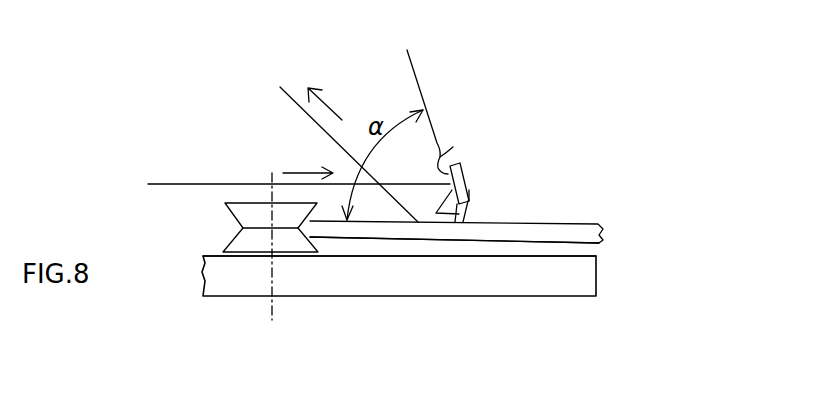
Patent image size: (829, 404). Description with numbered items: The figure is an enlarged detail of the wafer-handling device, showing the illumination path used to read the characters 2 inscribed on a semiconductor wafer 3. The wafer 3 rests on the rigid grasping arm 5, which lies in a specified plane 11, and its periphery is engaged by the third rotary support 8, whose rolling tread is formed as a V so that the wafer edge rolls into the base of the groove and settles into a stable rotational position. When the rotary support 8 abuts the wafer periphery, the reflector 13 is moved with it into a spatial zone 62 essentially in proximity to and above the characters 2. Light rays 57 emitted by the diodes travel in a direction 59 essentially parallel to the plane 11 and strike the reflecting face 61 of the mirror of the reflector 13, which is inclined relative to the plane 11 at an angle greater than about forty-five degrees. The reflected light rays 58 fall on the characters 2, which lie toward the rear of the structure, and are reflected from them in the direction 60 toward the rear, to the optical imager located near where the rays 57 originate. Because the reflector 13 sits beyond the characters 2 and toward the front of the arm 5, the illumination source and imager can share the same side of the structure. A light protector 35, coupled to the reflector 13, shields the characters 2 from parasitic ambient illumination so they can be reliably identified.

The characters 2 is at (475, 207).
The semiconductor wafer 3 is at (542, 223).
The rigid grasping arm 5 is at (365, 286).
The third rotary support 8 is at (241, 230).
The specified plane 11 is at (563, 257).
The reflector 13 is at (467, 167).
The light protector 35 is at (470, 190).
The light rays 57 is at (180, 184).
The reflected light rays 58 is at (428, 222).
The direction 59 is at (285, 170).
The direction 60 is at (328, 107).
The reflecting face 61 is at (453, 147).
The spatial zone 62 is at (545, 118).